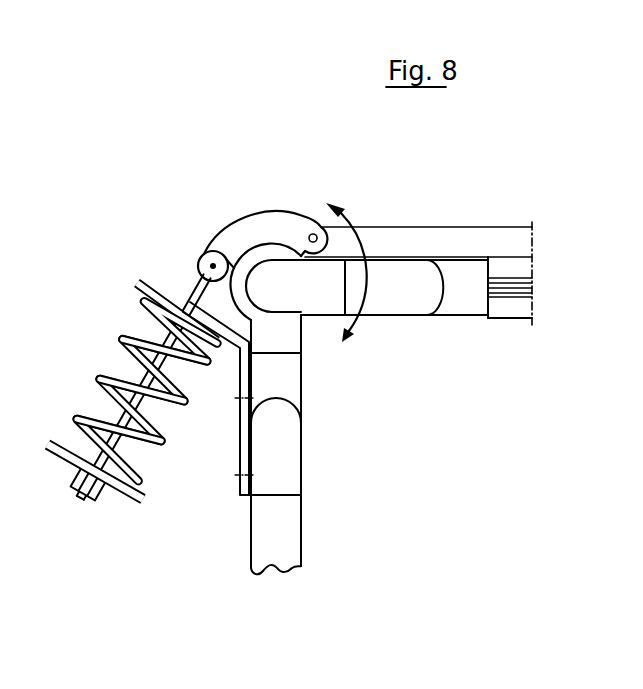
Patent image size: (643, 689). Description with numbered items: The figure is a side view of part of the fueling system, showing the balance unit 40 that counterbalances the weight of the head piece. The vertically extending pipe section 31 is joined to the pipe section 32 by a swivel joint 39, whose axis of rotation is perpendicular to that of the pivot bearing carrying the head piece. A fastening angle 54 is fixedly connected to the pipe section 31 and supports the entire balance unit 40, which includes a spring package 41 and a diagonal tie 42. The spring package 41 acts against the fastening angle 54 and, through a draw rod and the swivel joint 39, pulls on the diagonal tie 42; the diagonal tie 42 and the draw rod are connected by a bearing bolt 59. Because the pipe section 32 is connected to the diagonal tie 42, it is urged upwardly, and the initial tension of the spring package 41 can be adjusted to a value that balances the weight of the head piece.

The bearing bolt 59 is at (420, 201).
The swivel joint 39 is at (243, 282).
The diagonal tie 42 is at (513, 247).
The pipe section 32 is at (413, 303).
The fastening angle 54 is at (245, 457).
The pipe section 31 is at (278, 530).
The balance unit 40 is at (339, 430).
The spring package 41 is at (351, 450).